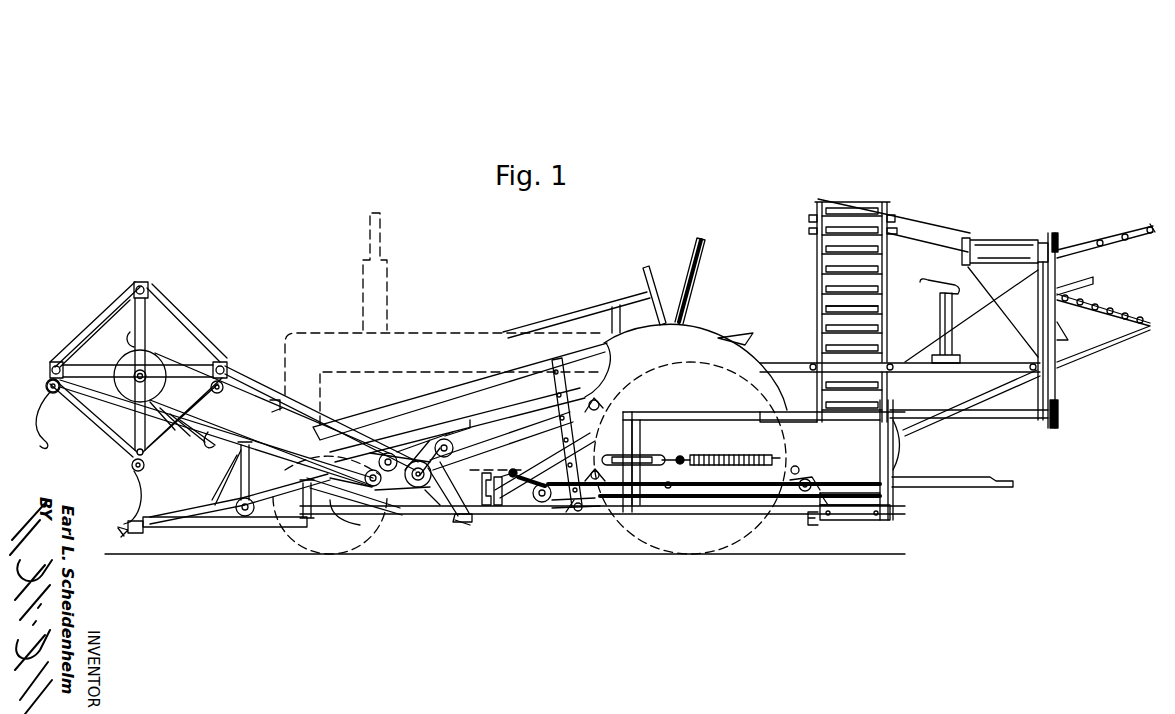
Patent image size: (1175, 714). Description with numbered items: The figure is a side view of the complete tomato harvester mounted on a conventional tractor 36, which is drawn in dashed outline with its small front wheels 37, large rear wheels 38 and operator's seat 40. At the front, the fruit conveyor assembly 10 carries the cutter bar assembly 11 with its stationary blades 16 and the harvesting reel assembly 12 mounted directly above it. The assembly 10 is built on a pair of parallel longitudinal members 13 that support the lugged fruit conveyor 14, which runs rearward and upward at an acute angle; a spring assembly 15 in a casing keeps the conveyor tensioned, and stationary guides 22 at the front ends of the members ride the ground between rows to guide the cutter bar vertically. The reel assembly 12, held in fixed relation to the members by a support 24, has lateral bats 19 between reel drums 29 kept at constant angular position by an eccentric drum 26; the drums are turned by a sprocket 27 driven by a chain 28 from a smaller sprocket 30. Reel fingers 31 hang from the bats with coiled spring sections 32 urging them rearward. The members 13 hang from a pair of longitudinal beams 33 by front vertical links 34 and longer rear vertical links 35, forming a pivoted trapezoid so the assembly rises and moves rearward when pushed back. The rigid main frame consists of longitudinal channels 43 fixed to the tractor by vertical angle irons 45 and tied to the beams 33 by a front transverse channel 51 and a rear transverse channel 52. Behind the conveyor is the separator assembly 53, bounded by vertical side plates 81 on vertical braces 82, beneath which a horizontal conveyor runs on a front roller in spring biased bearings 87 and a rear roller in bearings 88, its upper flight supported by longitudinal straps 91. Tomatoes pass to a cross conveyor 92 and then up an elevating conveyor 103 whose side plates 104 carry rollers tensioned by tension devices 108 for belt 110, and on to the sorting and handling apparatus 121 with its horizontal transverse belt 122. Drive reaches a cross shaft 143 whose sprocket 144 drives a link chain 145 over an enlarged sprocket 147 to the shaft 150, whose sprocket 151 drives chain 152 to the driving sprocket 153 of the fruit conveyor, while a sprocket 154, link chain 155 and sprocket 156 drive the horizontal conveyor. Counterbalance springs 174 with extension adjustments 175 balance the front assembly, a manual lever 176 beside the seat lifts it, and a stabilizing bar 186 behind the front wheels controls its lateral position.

The fruit conveyor assembly 10 is at (463, 376).
The cutter bar assembly 11 is at (121, 524).
The harvesting reel assembly 12 is at (186, 301).
The longitudinal members 13 is at (509, 443).
The fruit conveyor 14 is at (485, 421).
The spring assembly 15 is at (545, 436).
The stationary blades 16 is at (137, 533).
The lateral bats 19 is at (148, 292).
The stationary guides 22 is at (258, 531).
The support 24 is at (193, 425).
The eccentric drum 26 is at (84, 322).
The sprocket 27 is at (150, 368).
The chain 28 is at (238, 388).
The reel drums 29 is at (93, 348).
The sprocket 30 is at (415, 490).
The reel fingers 31 is at (128, 343).
The coiled spring sections 32 is at (44, 389).
The longitudinal beams 33 is at (528, 515).
The front vertical links 34 is at (462, 523).
The rear vertical links 35 is at (576, 511).
The tractor 36 is at (455, 327).
The front wheels 37 is at (355, 555).
The rear wheels 38 is at (703, 330).
The seat 40 is at (742, 333).
The longitudinal channels 43 is at (448, 526).
The vertical angle irons 45 is at (468, 478).
The front transverse channel 51 is at (511, 476).
The rear transverse channel 52 is at (818, 519).
The separator assembly 53 is at (681, 401).
The vertical side plates 81 is at (708, 445).
The vertical braces 82 is at (637, 447).
The spring biased bearings 87 is at (640, 500).
The bearings 88 is at (820, 481).
The longitudinal straps 91 is at (712, 505).
The cross conveyor 92 is at (861, 514).
The elevating conveyor 103 is at (809, 246).
The side plates 104 is at (817, 286).
The tension devices 108 is at (809, 223).
The conveyor belt 110 is at (874, 300).
The sorting and handling apparatus 121 is at (1039, 230).
The horizontal transverse belt 122 is at (1000, 238).
The cross shaft 143 is at (445, 439).
The sprocket 144 is at (425, 445).
The link chain 145 is at (460, 428).
The enlarged sprocket 147 is at (398, 515).
The shaft 150 is at (388, 453).
The sprocket 151 is at (376, 488).
The chain 152 is at (345, 492).
The driving sprocket 153 is at (238, 516).
The sprocket 154 is at (540, 491).
The link chain 155 is at (560, 513).
The sprocket 156 is at (822, 489).
The counterbalance springs 174 is at (765, 455).
The extension adjustments 175 is at (660, 455).
The manual lever 176 is at (697, 240).
The stabilizing bar 186 is at (425, 541).